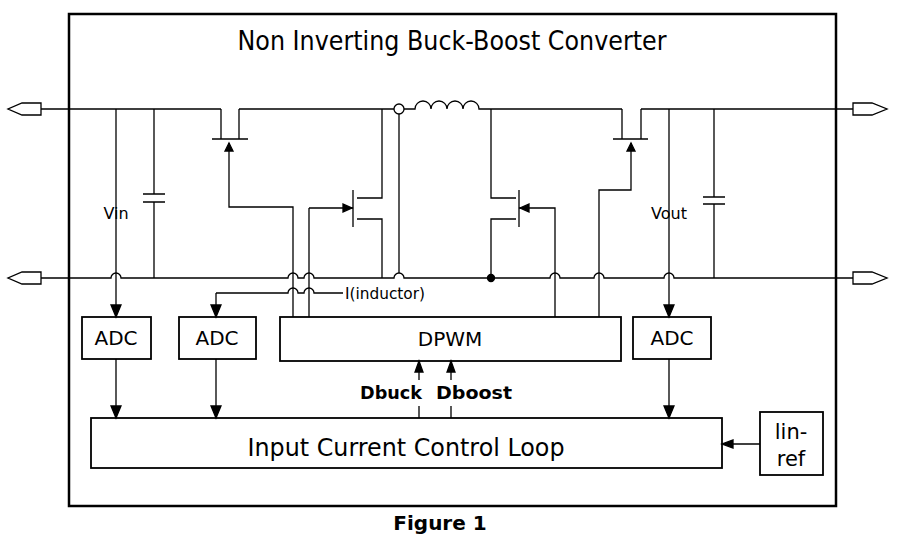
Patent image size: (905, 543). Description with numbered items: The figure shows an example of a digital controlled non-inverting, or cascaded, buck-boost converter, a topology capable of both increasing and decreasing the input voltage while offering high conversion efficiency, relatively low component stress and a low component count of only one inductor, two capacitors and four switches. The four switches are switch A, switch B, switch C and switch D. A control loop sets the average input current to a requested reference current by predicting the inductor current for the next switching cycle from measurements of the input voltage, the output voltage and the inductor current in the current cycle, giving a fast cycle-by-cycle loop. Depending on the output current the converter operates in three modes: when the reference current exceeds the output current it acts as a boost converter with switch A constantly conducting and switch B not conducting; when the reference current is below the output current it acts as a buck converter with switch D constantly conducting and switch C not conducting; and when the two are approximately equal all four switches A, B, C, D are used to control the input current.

The switch A is at (252, 203).
The switch B is at (345, 213).
The switch C is at (522, 213).
The switch D is at (623, 203).